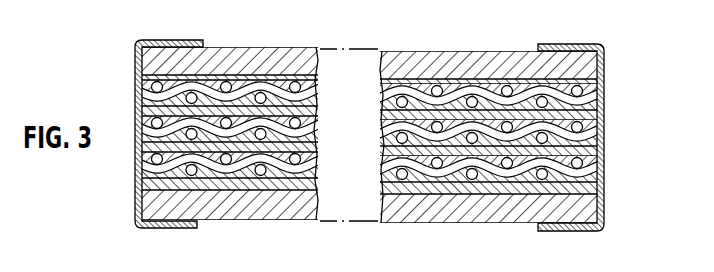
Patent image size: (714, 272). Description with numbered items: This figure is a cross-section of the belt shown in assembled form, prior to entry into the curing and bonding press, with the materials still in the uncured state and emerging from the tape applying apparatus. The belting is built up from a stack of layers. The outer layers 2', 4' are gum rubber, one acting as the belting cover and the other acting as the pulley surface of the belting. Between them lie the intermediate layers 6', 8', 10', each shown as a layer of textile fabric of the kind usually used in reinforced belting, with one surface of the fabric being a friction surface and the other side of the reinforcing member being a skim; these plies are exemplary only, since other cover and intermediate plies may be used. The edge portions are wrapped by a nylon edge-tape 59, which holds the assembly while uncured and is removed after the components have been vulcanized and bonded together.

The gum rubber layer 2' is at (488, 50).
The gum rubber layer 4' is at (488, 224).
The intermediate layer 6' is at (504, 103).
The intermediate layer 8' is at (505, 139).
The intermediate layer 10' is at (511, 176).
The nylon edge-tape 59 is at (135, 208).